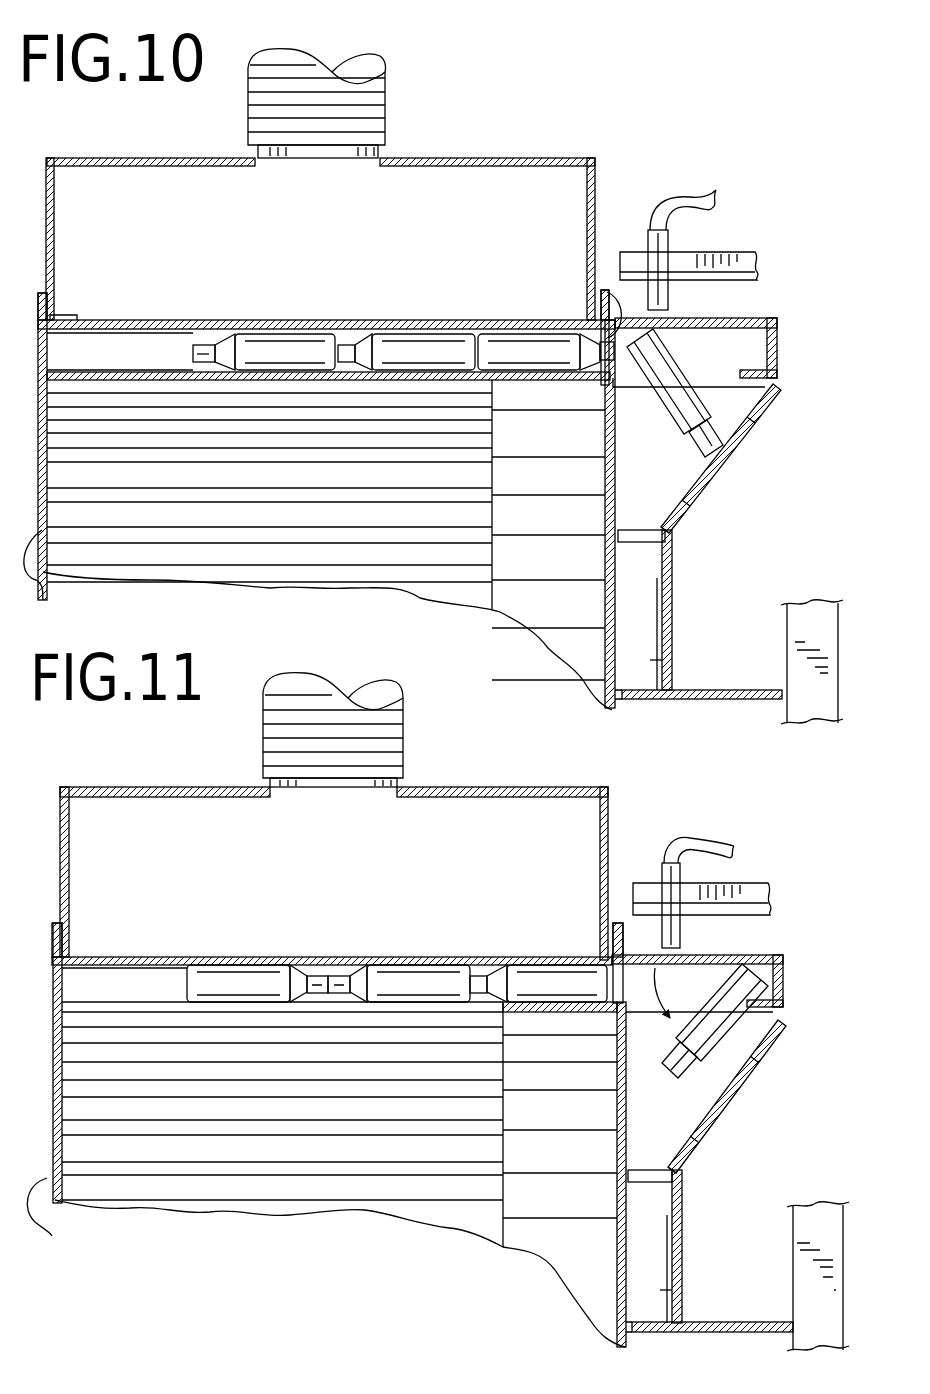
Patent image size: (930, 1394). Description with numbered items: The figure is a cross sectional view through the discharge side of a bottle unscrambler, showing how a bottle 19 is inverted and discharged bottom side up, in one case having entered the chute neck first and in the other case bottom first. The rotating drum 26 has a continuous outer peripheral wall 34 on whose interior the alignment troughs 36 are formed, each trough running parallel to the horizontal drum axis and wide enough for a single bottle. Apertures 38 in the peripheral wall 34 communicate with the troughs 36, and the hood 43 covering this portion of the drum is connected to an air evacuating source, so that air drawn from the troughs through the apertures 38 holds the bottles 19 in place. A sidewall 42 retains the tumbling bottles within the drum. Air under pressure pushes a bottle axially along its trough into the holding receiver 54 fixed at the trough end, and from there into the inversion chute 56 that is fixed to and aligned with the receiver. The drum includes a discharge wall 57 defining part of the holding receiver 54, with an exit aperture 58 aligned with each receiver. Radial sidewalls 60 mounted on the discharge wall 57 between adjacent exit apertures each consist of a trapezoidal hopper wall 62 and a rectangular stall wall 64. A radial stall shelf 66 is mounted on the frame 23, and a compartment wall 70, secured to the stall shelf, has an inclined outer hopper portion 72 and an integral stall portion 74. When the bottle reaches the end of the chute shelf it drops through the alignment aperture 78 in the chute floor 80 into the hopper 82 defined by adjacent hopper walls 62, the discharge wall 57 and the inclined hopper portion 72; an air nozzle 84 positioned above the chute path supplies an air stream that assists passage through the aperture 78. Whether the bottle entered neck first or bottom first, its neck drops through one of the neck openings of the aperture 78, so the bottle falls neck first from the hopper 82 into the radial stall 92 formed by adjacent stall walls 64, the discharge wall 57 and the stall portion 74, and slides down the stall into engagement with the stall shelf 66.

In FIG. 11, the bottle 19 is at (425, 957).
In FIG. 10, the frame 23 is at (840, 628).
In FIG. 11, the frame 23 is at (843, 1240).
In FIG. 10, the drum 26 is at (33, 436).
In FIG. 11, the drum 26 is at (52, 1115).
In FIG. 10, the peripheral wall 34 is at (105, 318).
In FIG. 11, the peripheral wall 34 is at (163, 957).
In FIG. 10, the alignment trough 36 is at (152, 340).
In FIG. 11, the alignment trough 36 is at (103, 977).
In FIG. 10, the aperture 38 is at (330, 320).
In FIG. 11, the aperture 38 is at (313, 958).
In FIG. 10, the sidewall 42 is at (318, 545).
In FIG. 11, the sidewall 42 is at (326, 1174).
In FIG. 10, the hood 43 is at (537, 156).
In FIG. 11, the hood 43 is at (517, 785).
In FIG. 10, the holding receiver 54 is at (530, 316).
In FIG. 11, the holding receiver 54 is at (547, 945).
In FIG. 10, the inversion chute 56 is at (761, 314).
In FIG. 11, the inversion chute 56 is at (770, 953).
In FIG. 10, the discharge wall 57 is at (607, 455).
In FIG. 11, the discharge wall 57 is at (620, 1100).
In FIG. 10, the exit aperture 58 is at (608, 290).
In FIG. 11, the exit aperture 58 is at (600, 988).
In FIG. 10, the radial sidewall 60 is at (680, 522).
In FIG. 11, the radial sidewall 60 is at (713, 1115).
In FIG. 10, the hopper wall 62 is at (747, 436).
In FIG. 11, the hopper wall 62 is at (743, 1042).
In FIG. 10, the stall wall 64 is at (645, 600).
In FIG. 11, the stall wall 64 is at (643, 1223).
In FIG. 10, the stall shelf 66 is at (722, 700).
In FIG. 11, the stall shelf 66 is at (757, 1320).
In FIG. 10, the compartment wall 70 is at (668, 540).
In FIG. 11, the compartment wall 70 is at (683, 1175).
In FIG. 10, the inclined outer hopper portion 72 is at (718, 478).
In FIG. 11, the inclined outer hopper portion 72 is at (757, 1070).
In FIG. 10, the stall portion 74 is at (677, 648).
In FIG. 11, the stall portion 74 is at (682, 1280).
In FIG. 10, the alignment aperture 78 is at (723, 380).
In FIG. 10, the chute floor 80 is at (762, 381).
In FIG. 11, the chute floor 80 is at (784, 992).
In FIG. 10, the hopper 82 is at (737, 408).
In FIG. 11, the hopper 82 is at (740, 1097).
In FIG. 10, the air nozzle 84 is at (667, 300).
In FIG. 11, the air nozzle 84 is at (678, 925).
In FIG. 10, the radial stall 92 is at (663, 663).
In FIG. 11, the radial stall 92 is at (668, 1290).